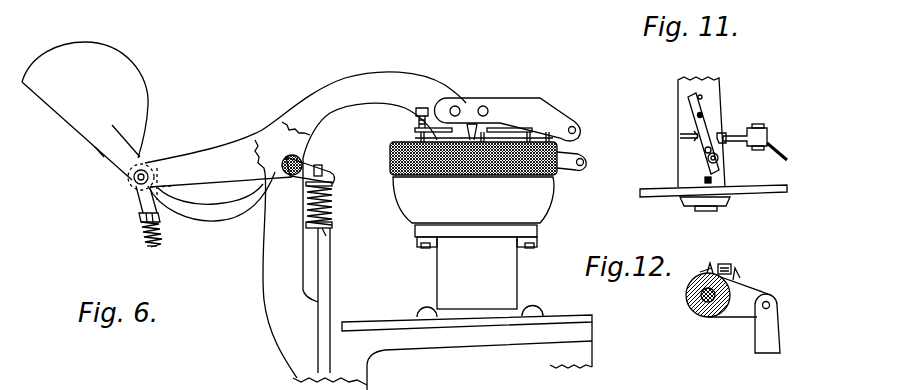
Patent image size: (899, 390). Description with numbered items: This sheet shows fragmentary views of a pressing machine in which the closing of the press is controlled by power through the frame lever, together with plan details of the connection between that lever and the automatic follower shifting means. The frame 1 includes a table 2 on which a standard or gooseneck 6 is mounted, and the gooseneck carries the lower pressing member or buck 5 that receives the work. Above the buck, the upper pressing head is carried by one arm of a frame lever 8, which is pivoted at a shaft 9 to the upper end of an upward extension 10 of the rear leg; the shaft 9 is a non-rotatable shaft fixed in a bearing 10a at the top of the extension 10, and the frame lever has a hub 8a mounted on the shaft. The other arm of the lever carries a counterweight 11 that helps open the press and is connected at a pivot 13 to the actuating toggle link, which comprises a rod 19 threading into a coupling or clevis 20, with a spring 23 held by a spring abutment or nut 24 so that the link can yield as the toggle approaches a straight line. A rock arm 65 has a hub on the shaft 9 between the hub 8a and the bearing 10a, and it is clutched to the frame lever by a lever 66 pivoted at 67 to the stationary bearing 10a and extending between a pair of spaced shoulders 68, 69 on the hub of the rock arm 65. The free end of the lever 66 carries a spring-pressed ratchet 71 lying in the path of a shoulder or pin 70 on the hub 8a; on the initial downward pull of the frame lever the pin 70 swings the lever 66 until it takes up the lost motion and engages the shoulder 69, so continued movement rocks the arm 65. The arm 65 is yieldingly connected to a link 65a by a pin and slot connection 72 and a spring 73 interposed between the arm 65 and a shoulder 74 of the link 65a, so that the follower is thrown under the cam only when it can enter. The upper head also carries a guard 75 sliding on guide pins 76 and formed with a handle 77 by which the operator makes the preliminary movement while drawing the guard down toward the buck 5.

In FIG. 6, the frame 1 is at (537, 348).
In FIG. 6, the table 2 is at (393, 318).
In FIG. 6, the lower pressing member or buck 5 is at (473, 200).
In FIG. 6, the standard or gooseneck 6 is at (479, 271).
In FIG. 6, the frame lever 8 is at (348, 76).
In FIG. 11, the frame lever 8 is at (641, 194).
In FIG. 11, the hub of the frame lever 8a is at (688, 162).
In FIG. 6, the pivot shaft 9 is at (283, 160).
In FIG. 11, the pivot shaft 9 is at (708, 207).
In FIG. 12, the pivot shaft 9 is at (687, 300).
In FIG. 6, the upward extension 10 is at (266, 268).
In FIG. 11, the bearing 10a is at (717, 88).
In FIG. 6, the counterweight 11 is at (72, 133).
In FIG. 6, the pivot 13 is at (133, 182).
In FIG. 6, the rod 19 is at (153, 248).
In FIG. 6, the coupling or clevis 20 is at (138, 208).
In FIG. 6, the spring 23 is at (145, 243).
In FIG. 6, the spring abutment or nut 24 is at (138, 227).
In FIG. 11, the rock arm 65 is at (768, 133).
In FIG. 12, the rock arm 65 is at (737, 308).
In FIG. 6, the link 65a is at (322, 277).
In FIG. 11, the link 65a is at (793, 162).
In FIG. 12, the link 65a is at (781, 343).
In FIG. 6, the clutch lever 66 is at (305, 158).
In FIG. 11, the clutch lever 66 is at (723, 128).
In FIG. 12, the clutch lever 66 is at (728, 264).
In FIG. 11, the pivot 67 is at (692, 106).
In FIG. 11, the shoulder 68 is at (694, 136).
In FIG. 12, the shoulder 68 is at (710, 267).
In FIG. 11, the shoulder 69 is at (722, 137).
In FIG. 12, the shoulder 69 is at (740, 275).
In FIG. 11, the shoulder or pin 70 is at (706, 181).
In FIG. 12, the shoulder or pin 70 is at (702, 273).
In FIG. 11, the spring-pressed ratchet 71 is at (727, 168).
In FIG. 6, the pin and slot connection 72 is at (322, 170).
In FIG. 6, the spring 73 is at (307, 219).
In FIG. 6, the shoulder 74 is at (308, 233).
In FIG. 6, the guard 75 is at (560, 176).
In FIG. 6, the guide pins 76 is at (403, 140).
In FIG. 6, the handle 77 is at (588, 164).